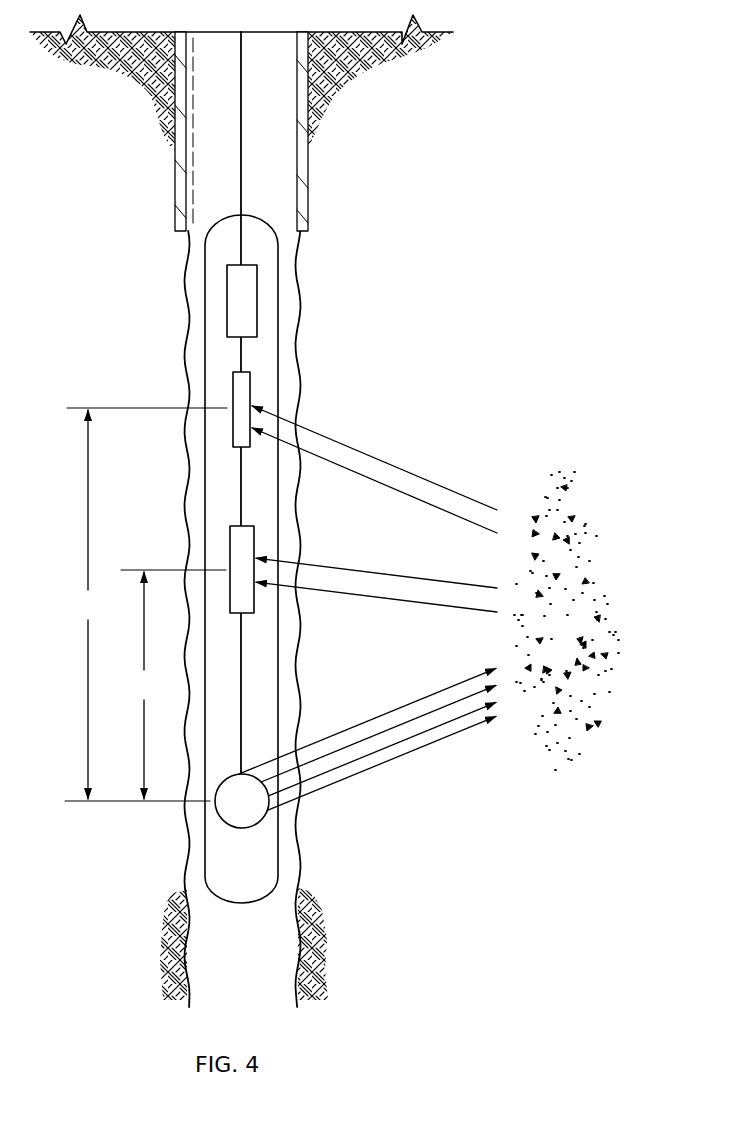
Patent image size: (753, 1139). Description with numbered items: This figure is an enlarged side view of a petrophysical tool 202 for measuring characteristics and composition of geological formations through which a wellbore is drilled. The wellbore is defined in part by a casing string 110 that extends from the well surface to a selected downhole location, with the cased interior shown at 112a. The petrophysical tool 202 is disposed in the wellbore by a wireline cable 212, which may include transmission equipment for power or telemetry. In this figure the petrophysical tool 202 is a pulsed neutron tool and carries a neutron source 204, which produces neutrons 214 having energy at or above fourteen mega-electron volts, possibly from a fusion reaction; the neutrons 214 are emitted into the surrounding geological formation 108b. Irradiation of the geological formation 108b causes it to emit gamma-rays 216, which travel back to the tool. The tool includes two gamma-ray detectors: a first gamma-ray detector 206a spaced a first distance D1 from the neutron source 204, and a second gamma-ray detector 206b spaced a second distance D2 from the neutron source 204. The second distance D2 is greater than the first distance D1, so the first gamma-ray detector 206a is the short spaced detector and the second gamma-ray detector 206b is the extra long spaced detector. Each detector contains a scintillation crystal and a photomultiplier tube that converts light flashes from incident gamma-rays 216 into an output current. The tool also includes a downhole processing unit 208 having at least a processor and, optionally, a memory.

The casing string 110 is at (310, 170).
The casing interior 112a is at (282, 191).
The wireline cable 212 is at (241, 171).
The petrophysical tool 202 is at (245, 905).
The downhole processing unit 208 is at (252, 300).
The second gamma-ray detector 206b is at (251, 385).
The first gamma-ray detector 206a is at (254, 541).
The neutron source 204 is at (232, 828).
The gamma-rays 216 is at (429, 456).
The neutrons 214 is at (389, 780).
The geological formation 108b is at (588, 572).
The first distance D1 is at (173, 684).
The second distance D2 is at (146, 604).